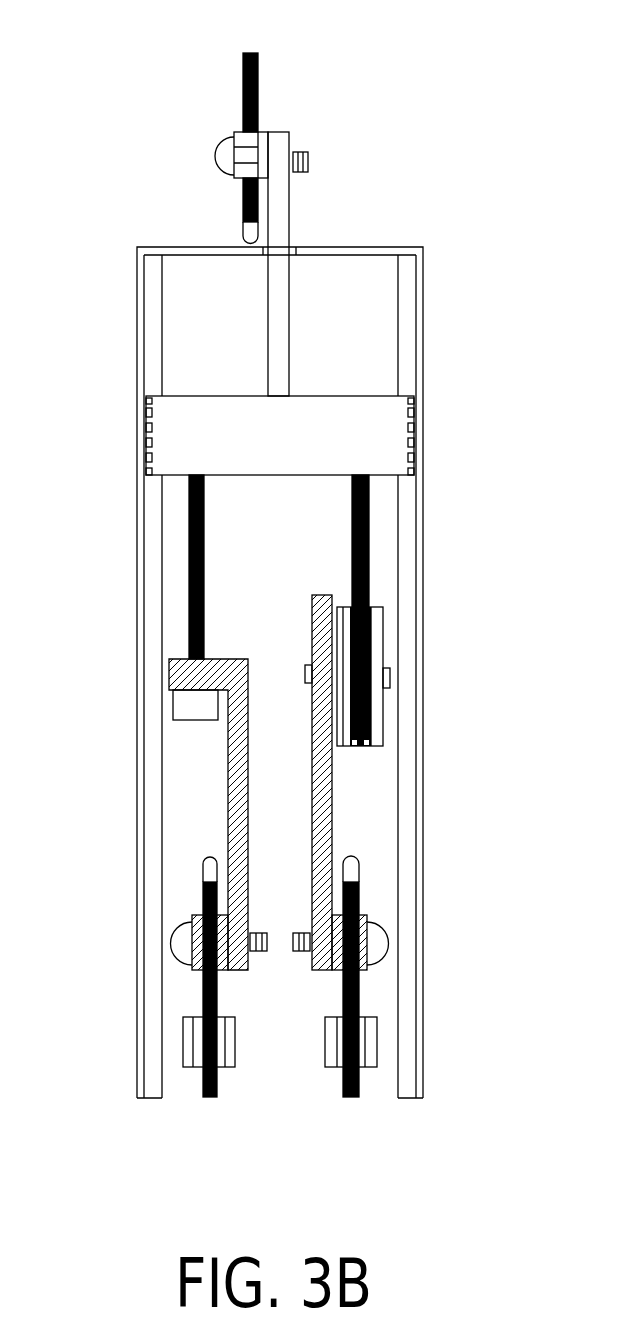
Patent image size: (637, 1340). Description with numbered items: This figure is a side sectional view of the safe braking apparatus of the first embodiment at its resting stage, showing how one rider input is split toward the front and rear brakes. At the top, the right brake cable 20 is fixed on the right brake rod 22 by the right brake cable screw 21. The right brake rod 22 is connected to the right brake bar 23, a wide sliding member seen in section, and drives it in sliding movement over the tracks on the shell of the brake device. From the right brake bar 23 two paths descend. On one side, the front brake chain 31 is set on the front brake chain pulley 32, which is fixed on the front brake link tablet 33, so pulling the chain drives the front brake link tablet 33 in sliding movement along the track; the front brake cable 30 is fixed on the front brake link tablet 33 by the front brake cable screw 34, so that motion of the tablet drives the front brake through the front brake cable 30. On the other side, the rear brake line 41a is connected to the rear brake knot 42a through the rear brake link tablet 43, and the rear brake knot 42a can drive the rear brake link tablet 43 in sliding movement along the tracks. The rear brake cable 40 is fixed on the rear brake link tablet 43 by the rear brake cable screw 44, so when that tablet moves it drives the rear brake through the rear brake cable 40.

The right brake cable 20 is at (251, 50).
The right brake cable screw 21 is at (230, 157).
The right brake rod 22 is at (283, 216).
The right brake bar 23 is at (384, 441).
The front brake cable 30 is at (350, 1100).
The front brake chain 31 is at (367, 570).
The front brake chain pulley 32 is at (377, 645).
The front brake link tablet 33 is at (325, 790).
The front brake cable screw 34 is at (387, 930).
The rear brake cable 40 is at (207, 1100).
The rear brake line 41a is at (189, 590).
The rear brake knot 42a is at (183, 706).
The rear brake link tablet 43 is at (229, 788).
The rear brake cable screw 44 is at (173, 935).